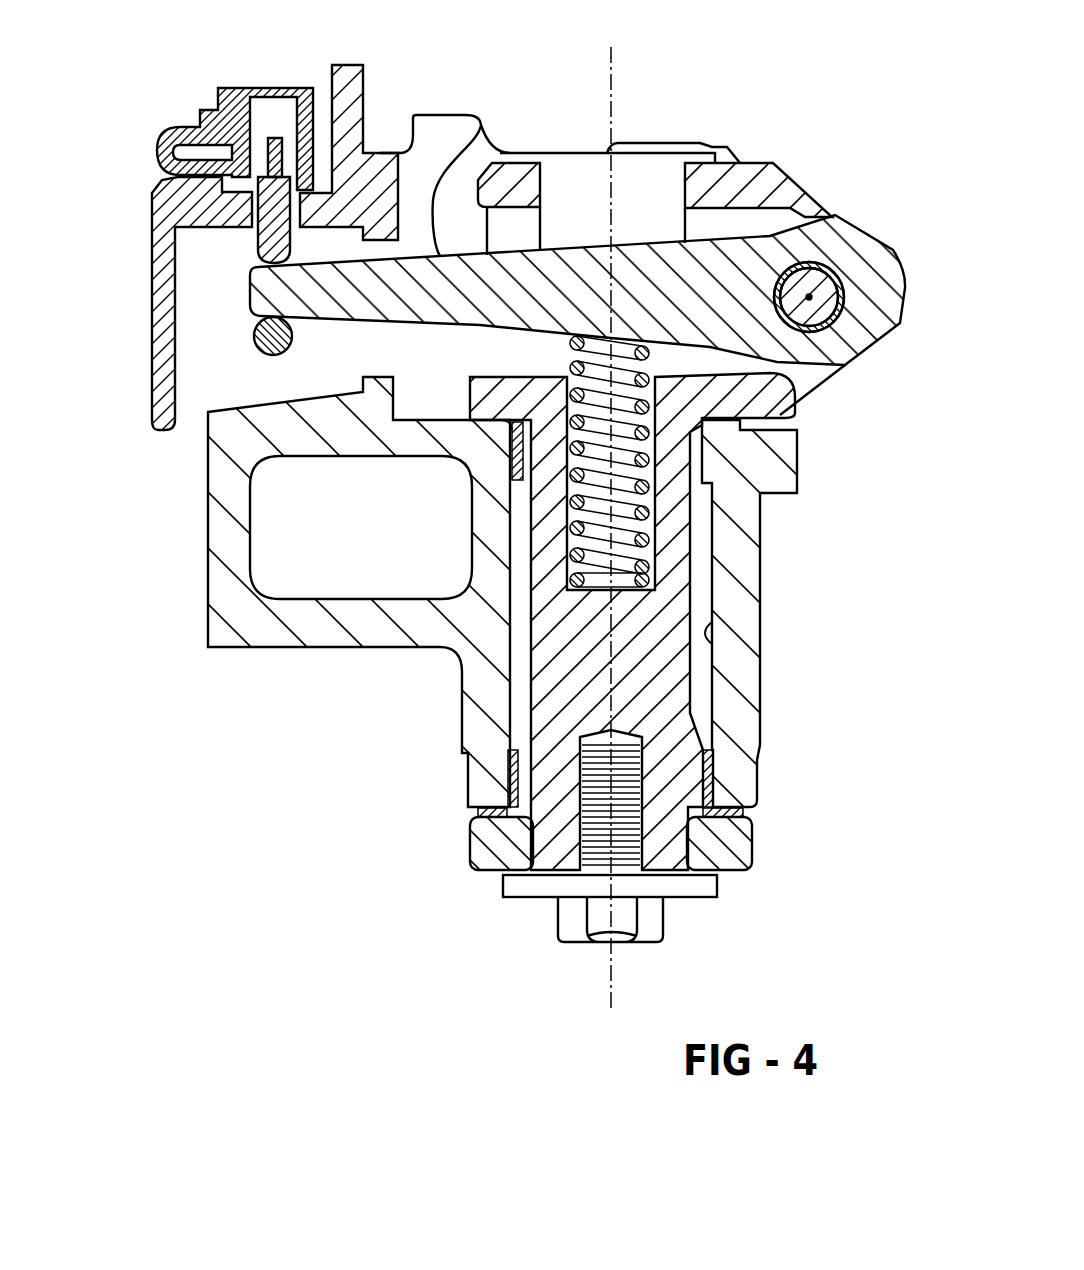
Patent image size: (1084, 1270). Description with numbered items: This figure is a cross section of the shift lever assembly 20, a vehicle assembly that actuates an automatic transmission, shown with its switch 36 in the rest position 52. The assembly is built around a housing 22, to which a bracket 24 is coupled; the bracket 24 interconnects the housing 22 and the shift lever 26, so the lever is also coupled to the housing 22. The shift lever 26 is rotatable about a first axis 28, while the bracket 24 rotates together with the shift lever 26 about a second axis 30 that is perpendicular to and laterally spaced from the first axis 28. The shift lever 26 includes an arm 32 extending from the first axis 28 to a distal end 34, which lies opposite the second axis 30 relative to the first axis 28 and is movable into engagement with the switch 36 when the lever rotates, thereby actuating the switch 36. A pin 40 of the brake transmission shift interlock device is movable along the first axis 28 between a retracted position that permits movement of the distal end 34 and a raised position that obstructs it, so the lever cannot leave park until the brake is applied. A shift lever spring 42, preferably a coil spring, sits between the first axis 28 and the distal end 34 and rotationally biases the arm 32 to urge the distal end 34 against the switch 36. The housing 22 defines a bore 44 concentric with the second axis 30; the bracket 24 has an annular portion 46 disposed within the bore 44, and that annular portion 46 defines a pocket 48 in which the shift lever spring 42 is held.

The shift lever assembly 20 is at (728, 82).
The housing 22 is at (763, 737).
The bracket 24 is at (748, 180).
The shift lever 26 is at (835, 215).
The first axis 28 is at (814, 302).
The second axis 30 is at (611, 975).
The arm 32 is at (433, 200).
The distal end 34 is at (248, 288).
The switch 36 is at (240, 88).
The pin 40 is at (253, 332).
The shift lever spring 42 is at (578, 500).
The bore 44 is at (707, 650).
The annular portion 46 is at (517, 672).
The pocket 48 is at (580, 525).
The rest position 52 is at (250, 252).